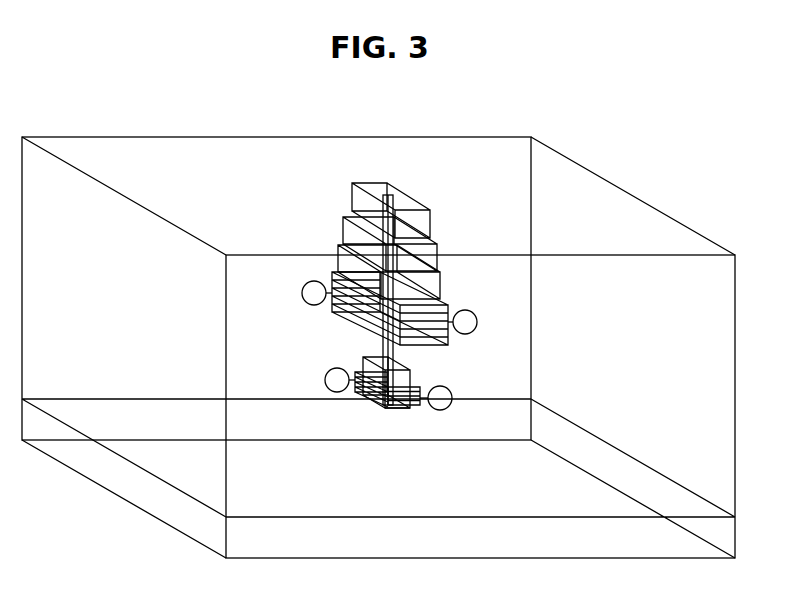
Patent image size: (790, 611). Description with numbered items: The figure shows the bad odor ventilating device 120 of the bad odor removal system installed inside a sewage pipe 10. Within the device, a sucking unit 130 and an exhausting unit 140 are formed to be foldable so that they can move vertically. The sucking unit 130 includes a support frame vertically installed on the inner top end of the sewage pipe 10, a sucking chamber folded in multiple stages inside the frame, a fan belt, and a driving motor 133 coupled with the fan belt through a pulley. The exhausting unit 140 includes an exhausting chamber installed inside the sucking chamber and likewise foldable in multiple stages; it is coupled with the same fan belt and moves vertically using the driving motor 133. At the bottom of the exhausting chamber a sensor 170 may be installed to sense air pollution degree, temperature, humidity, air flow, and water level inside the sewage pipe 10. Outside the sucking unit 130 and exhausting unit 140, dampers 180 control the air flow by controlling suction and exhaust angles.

The sewage pipe 10 is at (618, 187).
The bad odor ventilating device 120 is at (247, 272).
The sucking unit 130 is at (343, 262).
The driving motor 133 is at (478, 322).
The exhausting unit 140 is at (363, 362).
The sensor 170 is at (378, 410).
The dampers 180 is at (450, 387).